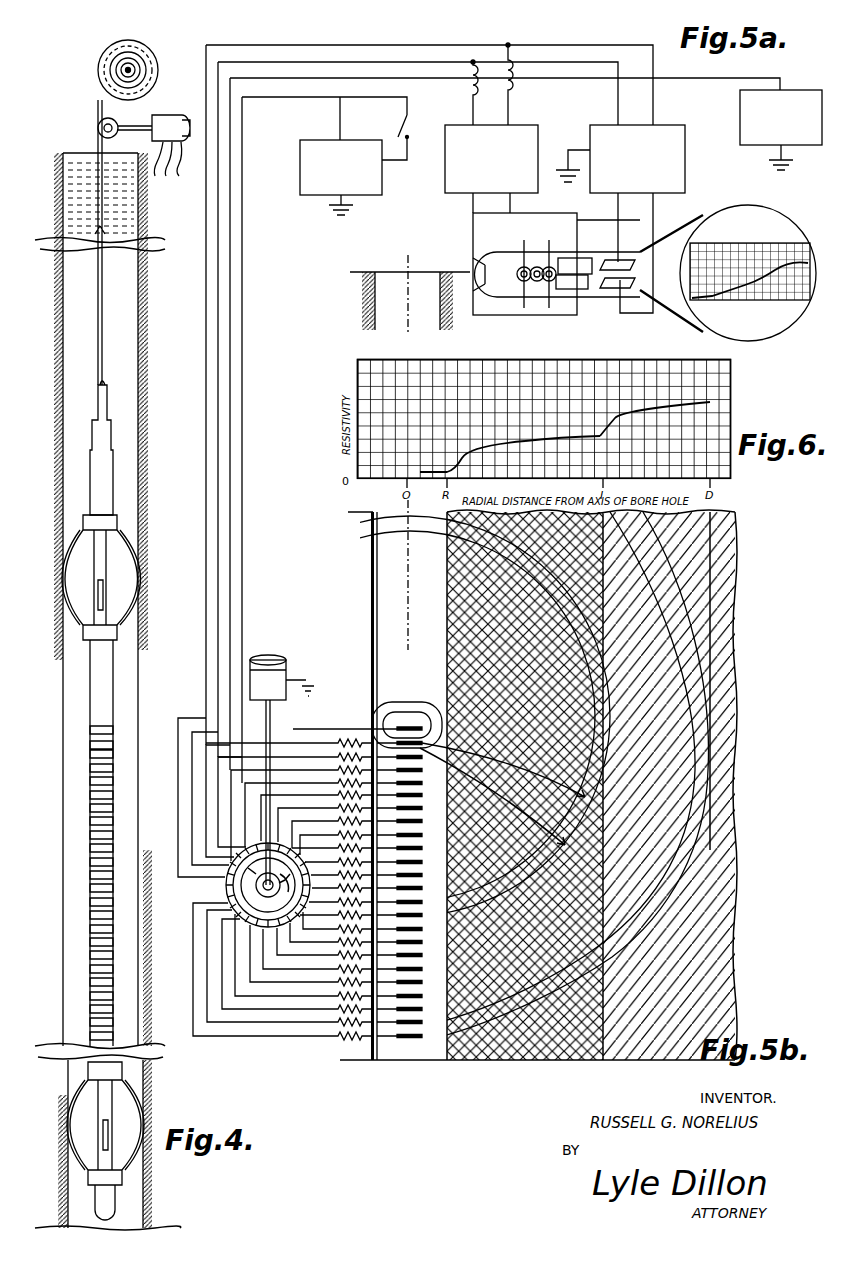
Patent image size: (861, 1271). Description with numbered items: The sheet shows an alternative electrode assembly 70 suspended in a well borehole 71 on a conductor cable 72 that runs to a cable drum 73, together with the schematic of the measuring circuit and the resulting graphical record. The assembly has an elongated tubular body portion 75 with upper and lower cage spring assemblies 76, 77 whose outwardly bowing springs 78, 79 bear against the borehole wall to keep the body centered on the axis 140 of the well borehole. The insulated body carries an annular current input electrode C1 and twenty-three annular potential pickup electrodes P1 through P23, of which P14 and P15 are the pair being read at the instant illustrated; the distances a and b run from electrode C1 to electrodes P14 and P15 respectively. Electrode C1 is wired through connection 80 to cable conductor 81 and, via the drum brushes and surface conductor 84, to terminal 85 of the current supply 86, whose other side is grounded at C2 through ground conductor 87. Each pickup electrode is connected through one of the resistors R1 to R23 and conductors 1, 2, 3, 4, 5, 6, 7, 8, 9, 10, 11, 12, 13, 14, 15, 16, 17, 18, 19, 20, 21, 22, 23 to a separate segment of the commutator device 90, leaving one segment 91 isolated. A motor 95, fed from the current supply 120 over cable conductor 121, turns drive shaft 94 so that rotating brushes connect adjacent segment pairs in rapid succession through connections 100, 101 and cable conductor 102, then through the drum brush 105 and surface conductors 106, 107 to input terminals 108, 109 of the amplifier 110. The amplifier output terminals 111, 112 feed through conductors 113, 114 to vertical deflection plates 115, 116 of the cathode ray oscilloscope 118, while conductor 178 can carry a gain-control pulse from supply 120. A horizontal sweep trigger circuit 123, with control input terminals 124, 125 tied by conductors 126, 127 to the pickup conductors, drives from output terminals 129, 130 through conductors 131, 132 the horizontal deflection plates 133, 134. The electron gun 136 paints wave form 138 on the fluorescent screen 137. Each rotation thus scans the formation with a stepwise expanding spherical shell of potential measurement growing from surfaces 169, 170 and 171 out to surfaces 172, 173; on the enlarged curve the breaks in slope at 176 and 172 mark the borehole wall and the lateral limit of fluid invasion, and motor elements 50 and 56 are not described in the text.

In FIG. 4, the motor 50 is at (172, 142).
In FIG. 4, the motor leads 56 is at (167, 176).
In FIG. 4, the electrode assembly 70 is at (65, 697).
In FIG. 4, the well borehole 71 is at (132, 298).
In FIG. 5A, the well borehole 71 is at (364, 326).
In FIG. 4, the conductor cable 72 is at (103, 350).
In FIG. 5A, the conductor cable 72 is at (254, 286).
In FIG. 4, the cable drum 73 is at (103, 52).
In FIG. 4, the tubular body portion 75 is at (108, 660).
In FIG. 4, the cage spring assembly 76 is at (134, 577).
In FIG. 4, the cage spring assembly 77 is at (126, 1154).
In FIG. 4, the outwardly bowing spring 78 is at (125, 536).
In FIG. 4, the outwardly bowing spring 79 is at (138, 1100).
In FIG. 5A, the connection 80 is at (298, 710).
In FIG. 5A, the cable conductor 81 is at (130, 92).
In FIG. 5A, the surface conductor 84 is at (388, 91).
In FIG. 5A, the terminal 85 is at (782, 90).
In FIG. 5A, the current supply 86 is at (740, 111).
In FIG. 5A, the ground conductor 87 is at (792, 150).
In FIG. 5A, the commutator device 90 is at (223, 913).
In FIG. 5A, the commutator segment 91 is at (250, 880).
In FIG. 5A, the drive shaft 94 is at (265, 716).
In FIG. 5A, the motor 95 is at (286, 662).
In FIG. 5A, the connection 100 is at (177, 795).
In FIG. 5A, the connection 101 is at (192, 829).
In FIG. 5A, the cable conductor 102 is at (135, 60).
In FIG. 5A, the brush 105 is at (170, 36).
In FIG. 5A, the surface conductor 106 is at (405, 58).
In FIG. 5A, the surface conductor 107 is at (350, 45).
In FIG. 5A, the input terminal 108 is at (618, 126).
In FIG. 5A, the input terminal 109 is at (653, 123).
In FIG. 5A, the amplifier 110 is at (685, 151).
In FIG. 5A, the output terminal 111 is at (618, 193).
In FIG. 5A, the output terminal 112 is at (653, 194).
In FIG. 5A, the conductor 113 is at (618, 223).
In FIG. 5A, the conductor 114 is at (653, 215).
In FIG. 5A, the vertical deflection plate 115 is at (620, 260).
In FIG. 5A, the vertical deflection plate 116 is at (608, 290).
In FIG. 5A, the cathode ray oscilloscope 118 is at (662, 337).
In FIG. 5A, the current supply 120 is at (300, 169).
In FIG. 5A, the cable conductor 121 is at (140, 74).
In FIG. 5A, the horizontal sweep trigger circuit 123 is at (445, 185).
In FIG. 5A, the control input terminal 124 is at (473, 126).
In FIG. 5A, the control input terminal 125 is at (508, 126).
In FIG. 5A, the conductor 126 is at (472, 92).
In FIG. 5A, the conductor 127 is at (508, 91).
In FIG. 5A, the output terminal 129 is at (472, 197).
In FIG. 5A, the output terminal 130 is at (512, 194).
In FIG. 5A, the conductor 131 is at (473, 236).
In FIG. 5A, the conductor 132 is at (577, 222).
In FIG. 5A, the horizontal deflection plate 133 is at (574, 289).
In FIG. 5A, the horizontal deflection plate 134 is at (564, 258).
In FIG. 5A, the electron gun 136 is at (503, 260).
In FIG. 5A, the fluorescent screen 137 is at (774, 228).
In FIG. 5A, the wave form 138 is at (742, 298).
In FIG. 6, the wave form 138 is at (536, 432).
In FIG. 5B, the axis of the well borehole 140 is at (402, 622).
In FIG. 5B, the spherical surface 169 is at (421, 706).
In FIG. 5B, the spherical surface 170 is at (566, 630).
In FIG. 5B, the spherical surface 171 is at (570, 606).
In FIG. 6, the spherical surface / curve point 172 is at (610, 426).
In FIG. 5B, the spherical surface / curve point 172 is at (685, 613).
In FIG. 5B, the spherical surface 173 is at (700, 636).
In FIG. 6, the break in slope 176 is at (470, 448).
In FIG. 5A, the conductor 178 is at (563, 93).
In FIG. 4, the current input electrode C1 is at (90, 736).
In FIG. 5B, the current input electrode C1 is at (420, 727).
In FIG. 5A, the ground C2 is at (772, 165).
In FIG. 4, the potential pickup electrode P1 is at (90, 745).
In FIG. 5B, the potential pickup electrode P1 is at (422, 741).
In FIG. 5B, the potential pickup electrode P14 is at (422, 915).
In FIG. 5B, the potential pickup electrode P15 is at (422, 929).
In FIG. 4, the potential pickup electrode P23 is at (90, 1036).
In FIG. 5B, the potential pickup electrode P23 is at (422, 1036).
In FIG. 5A, the resistor R1 is at (345, 736).
In FIG. 5A, the resistor R23 is at (348, 1038).
In FIG. 5B, the distance a is at (503, 770).
In FIG. 5B, the distance b is at (492, 796).
In FIG. 5A, the conductor 1 is at (289, 739).
In FIG. 5A, the conductor 2 is at (295, 753).
In FIG. 5A, the conductor 3 is at (301, 809).
In FIG. 5A, the conductor 4 is at (308, 809).
In FIG. 5A, the conductor 5 is at (316, 812).
In FIG. 5A, the conductor 6 is at (325, 819).
In FIG. 5A, the conductor 7 is at (332, 828).
In FIG. 5A, the conductor 8 is at (336, 839).
In FIG. 5A, the conductor 9 is at (332, 844).
In FIG. 5A, the conductor 10 is at (338, 858).
In FIG. 5A, the conductor 11 is at (341, 871).
In FIG. 5A, the conductor 12 is at (342, 884).
In FIG. 5A, the conductor 13 is at (340, 898).
In FIG. 5A, the conductor 14 is at (336, 911).
In FIG. 5A, the conductor 15 is at (337, 922).
In FIG. 5A, the conductor 16 is at (331, 934).
In FIG. 5A, the conductor 17 is at (324, 943).
In FIG. 5A, the conductor 18 is at (317, 951).
In FIG. 5A, the conductor 19 is at (311, 955).
In FIG. 5A, the conductor 20 is at (303, 957).
In FIG. 5A, the conductor 21 is at (297, 966).
In FIG. 5A, the conductor 22 is at (289, 968).
In FIG. 5A, the conductor 23 is at (282, 971).